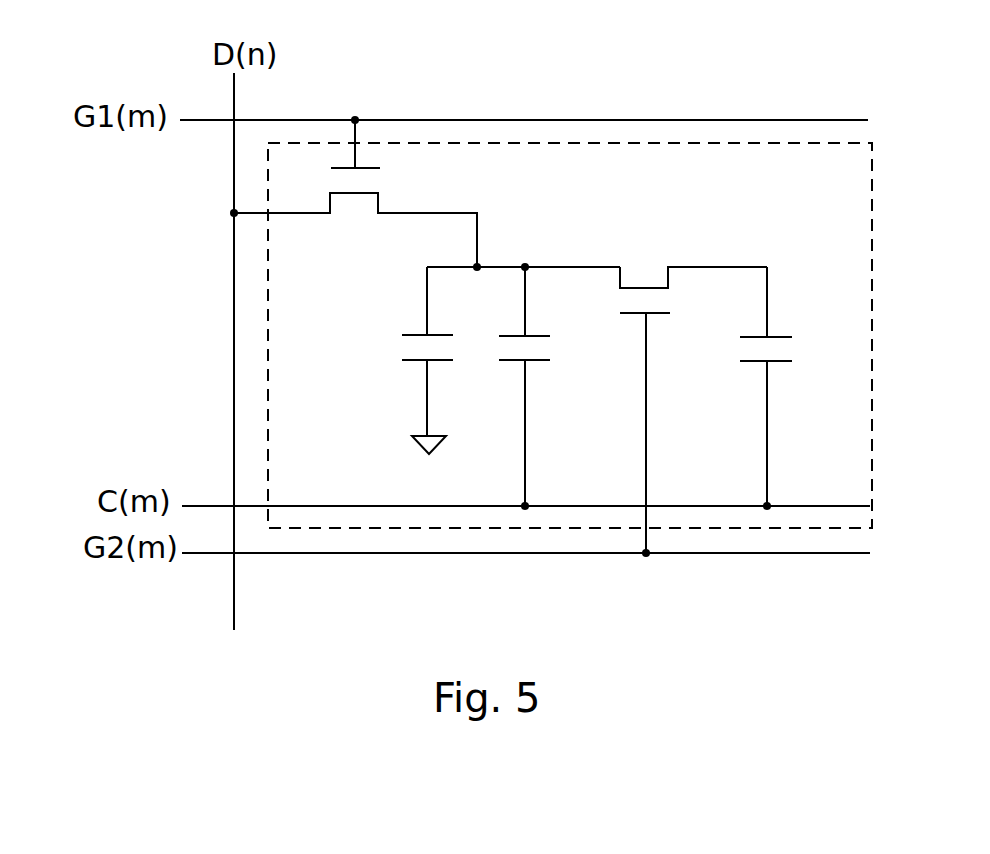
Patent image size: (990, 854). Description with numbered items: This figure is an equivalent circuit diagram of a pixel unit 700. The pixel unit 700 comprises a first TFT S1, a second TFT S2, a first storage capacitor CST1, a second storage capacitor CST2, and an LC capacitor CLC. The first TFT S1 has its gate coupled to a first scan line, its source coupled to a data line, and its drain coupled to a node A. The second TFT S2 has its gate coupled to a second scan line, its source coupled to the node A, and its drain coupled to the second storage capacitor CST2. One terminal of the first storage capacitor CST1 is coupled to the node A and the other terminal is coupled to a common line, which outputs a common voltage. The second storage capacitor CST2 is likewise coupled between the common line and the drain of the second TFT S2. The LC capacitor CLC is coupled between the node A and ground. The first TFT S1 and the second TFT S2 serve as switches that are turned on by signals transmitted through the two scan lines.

The pixel unit 700 is at (610, 336).
The first TFT S1 is at (355, 193).
The second TFT S2 is at (693, 394).
The node A is at (523, 249).
The LC capacitor CLC is at (397, 360).
The first storage capacitor CST1 is at (565, 386).
The second storage capacitor CST2 is at (800, 386).